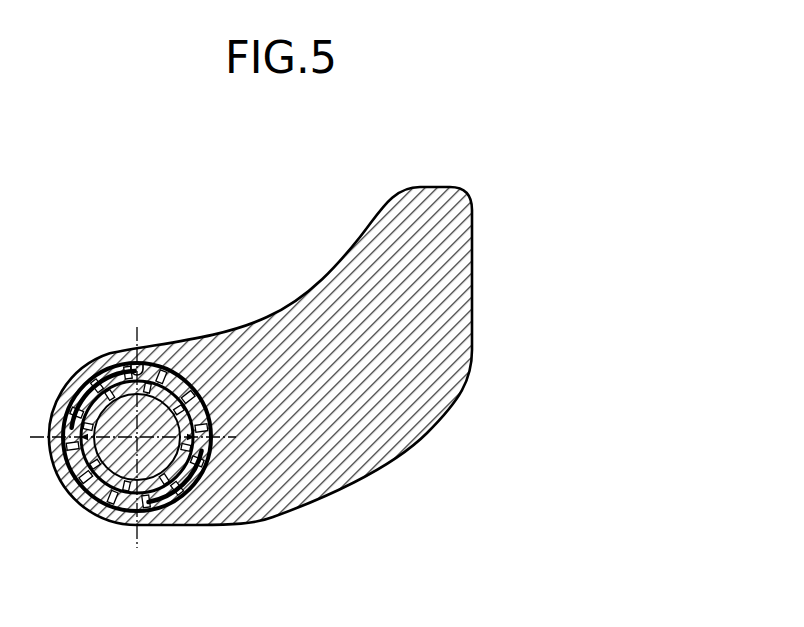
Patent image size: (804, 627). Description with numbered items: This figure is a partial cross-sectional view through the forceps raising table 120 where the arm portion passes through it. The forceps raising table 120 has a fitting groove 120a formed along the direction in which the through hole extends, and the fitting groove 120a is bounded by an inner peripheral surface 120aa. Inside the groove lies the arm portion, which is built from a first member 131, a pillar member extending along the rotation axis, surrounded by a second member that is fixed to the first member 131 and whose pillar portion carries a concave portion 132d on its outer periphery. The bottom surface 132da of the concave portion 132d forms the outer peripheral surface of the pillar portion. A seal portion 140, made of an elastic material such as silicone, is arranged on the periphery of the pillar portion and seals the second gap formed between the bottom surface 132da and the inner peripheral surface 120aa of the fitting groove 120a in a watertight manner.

The forceps raising table 120 is at (445, 183).
The fitting groove 120a is at (180, 405).
The inner peripheral surface 120aa is at (130, 368).
The first member 131 is at (83, 508).
The concave portion 132d is at (129, 507).
The bottom surface 132da is at (155, 504).
The seal portion 140 is at (199, 496).